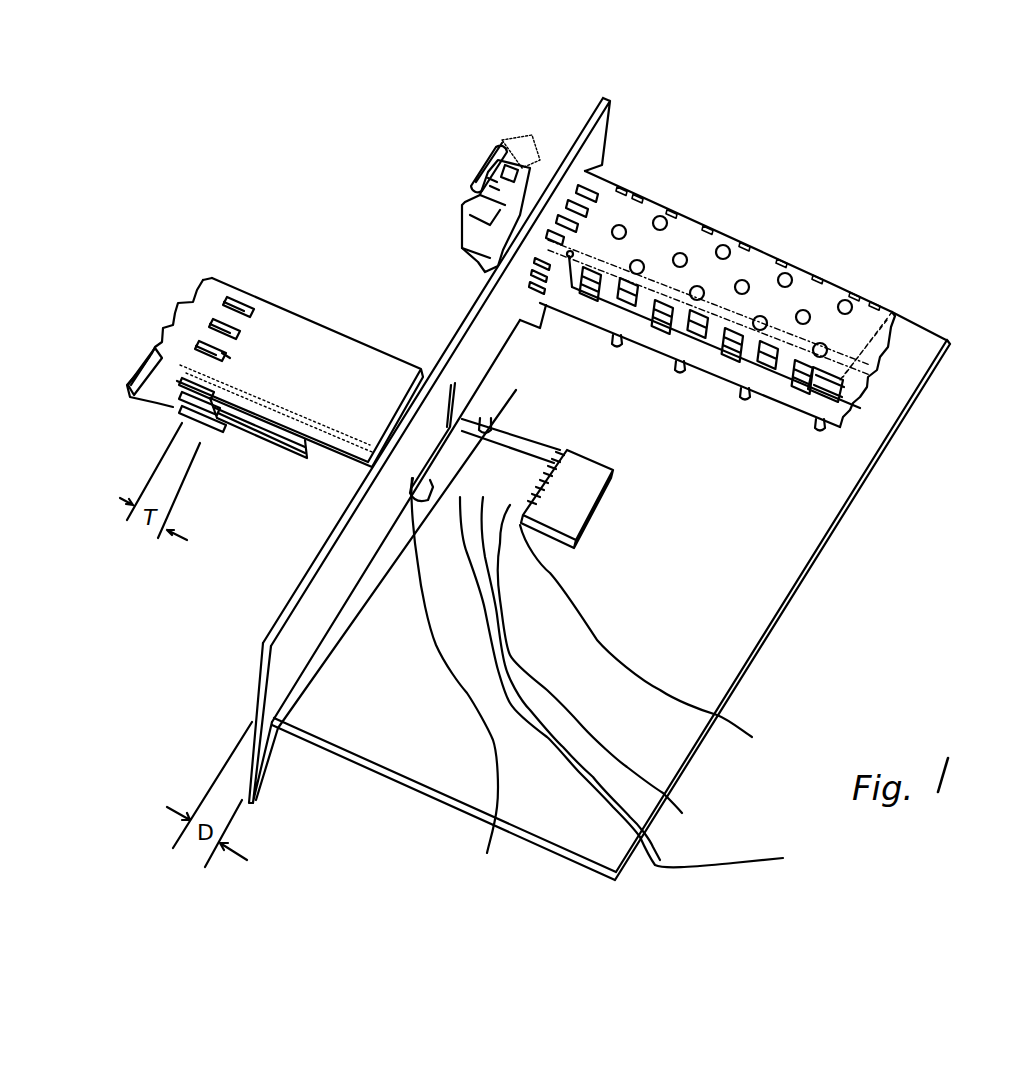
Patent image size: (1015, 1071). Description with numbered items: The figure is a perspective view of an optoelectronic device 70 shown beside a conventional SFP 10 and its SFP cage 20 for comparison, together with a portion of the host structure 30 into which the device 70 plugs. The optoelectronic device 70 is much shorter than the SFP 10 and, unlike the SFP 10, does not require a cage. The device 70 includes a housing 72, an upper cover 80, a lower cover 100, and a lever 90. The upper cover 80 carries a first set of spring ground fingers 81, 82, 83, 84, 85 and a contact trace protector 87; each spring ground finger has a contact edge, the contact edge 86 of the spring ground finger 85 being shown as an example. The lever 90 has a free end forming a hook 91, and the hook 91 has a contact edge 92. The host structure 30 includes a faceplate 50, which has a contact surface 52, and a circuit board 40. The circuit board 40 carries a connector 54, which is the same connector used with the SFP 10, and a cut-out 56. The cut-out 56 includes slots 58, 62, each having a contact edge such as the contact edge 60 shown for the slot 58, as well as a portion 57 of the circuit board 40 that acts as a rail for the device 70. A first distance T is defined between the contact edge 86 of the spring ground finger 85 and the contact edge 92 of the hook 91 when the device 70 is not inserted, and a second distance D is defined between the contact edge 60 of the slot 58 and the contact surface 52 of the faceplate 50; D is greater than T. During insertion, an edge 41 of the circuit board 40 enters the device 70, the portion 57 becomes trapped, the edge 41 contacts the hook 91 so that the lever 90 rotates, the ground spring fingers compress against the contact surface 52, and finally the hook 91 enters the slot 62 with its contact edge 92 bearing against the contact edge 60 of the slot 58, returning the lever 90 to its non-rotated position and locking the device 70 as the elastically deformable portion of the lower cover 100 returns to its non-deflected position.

The SFP 10 is at (552, 163).
The SFP cage 20 is at (797, 270).
The host structure 30 is at (610, 123).
The circuit board 40 is at (836, 527).
The edge 41 is at (454, 679).
The faceplate 50 is at (326, 545).
The contact surface 52 is at (290, 595).
The connector 54 is at (610, 470).
The cut-out 56 is at (651, 646).
The portion 57 is at (641, 694).
The slot 58 is at (594, 696).
The contact edge 60 is at (608, 672).
The slot 62 is at (490, 428).
The optoelectronic device 70 is at (210, 277).
The housing 72 is at (207, 278).
The upper cover 80 is at (227, 358).
The spring ground finger 81 is at (243, 308).
The spring ground finger 82 is at (252, 315).
The spring ground finger 83 is at (230, 358).
The spring ground finger 84 is at (192, 403).
The spring ground finger 85 is at (197, 413).
The contact edge 86 is at (200, 423).
The contact trace protector 87 is at (392, 353).
The lever 90 is at (137, 377).
The hook 91 is at (240, 427).
The contact edge 92 is at (230, 425).
The lower cover 100 is at (303, 454).